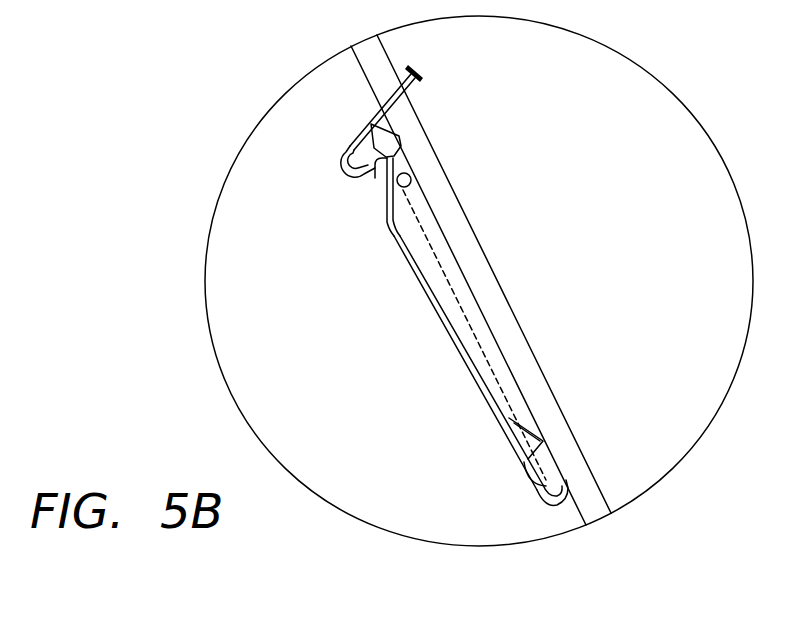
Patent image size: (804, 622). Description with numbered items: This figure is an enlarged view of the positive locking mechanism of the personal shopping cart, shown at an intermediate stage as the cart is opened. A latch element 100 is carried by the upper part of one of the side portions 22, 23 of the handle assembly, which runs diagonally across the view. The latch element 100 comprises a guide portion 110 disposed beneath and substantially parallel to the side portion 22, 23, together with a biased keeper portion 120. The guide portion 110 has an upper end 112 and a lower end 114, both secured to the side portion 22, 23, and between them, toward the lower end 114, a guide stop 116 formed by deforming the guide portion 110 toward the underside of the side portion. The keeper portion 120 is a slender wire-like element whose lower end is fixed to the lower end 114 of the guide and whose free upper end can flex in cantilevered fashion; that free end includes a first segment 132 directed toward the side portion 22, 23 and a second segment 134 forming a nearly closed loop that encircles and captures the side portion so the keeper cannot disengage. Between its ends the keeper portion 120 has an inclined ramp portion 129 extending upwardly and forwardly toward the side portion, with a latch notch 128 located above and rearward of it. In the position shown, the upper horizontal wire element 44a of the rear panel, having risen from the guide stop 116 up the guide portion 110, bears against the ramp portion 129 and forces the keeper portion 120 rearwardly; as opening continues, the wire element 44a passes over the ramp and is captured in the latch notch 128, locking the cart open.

The side portion of the handle assembly 22 is at (481, 280).
The side portion of the handle assembly 23 is at (460, 235).
The latch element 100 is at (430, 292).
The guide portion 110 is at (478, 364).
The upper end of the guide portion 112 is at (394, 143).
The lower end of the guide portion 114 is at (562, 508).
The guide stop 116 is at (543, 441).
The keeper portion 120 is at (413, 278).
The latch notch 128 is at (373, 177).
The inclined ramp portion 129 is at (387, 212).
The first segment of the keeper portion 132 is at (353, 140).
The second segment of the keeper portion 134 is at (414, 80).
The upper horizontal wire element 44a is at (412, 181).